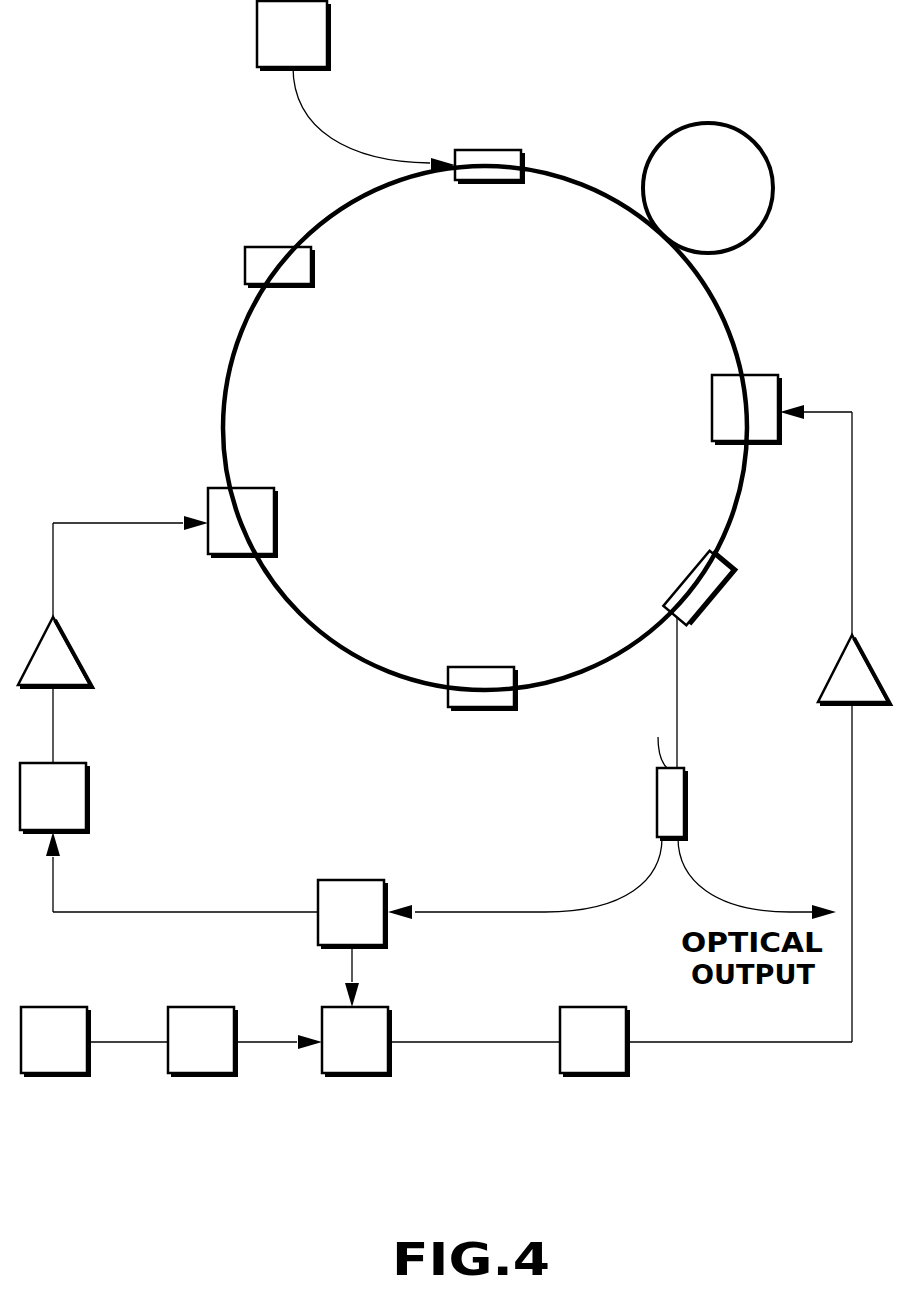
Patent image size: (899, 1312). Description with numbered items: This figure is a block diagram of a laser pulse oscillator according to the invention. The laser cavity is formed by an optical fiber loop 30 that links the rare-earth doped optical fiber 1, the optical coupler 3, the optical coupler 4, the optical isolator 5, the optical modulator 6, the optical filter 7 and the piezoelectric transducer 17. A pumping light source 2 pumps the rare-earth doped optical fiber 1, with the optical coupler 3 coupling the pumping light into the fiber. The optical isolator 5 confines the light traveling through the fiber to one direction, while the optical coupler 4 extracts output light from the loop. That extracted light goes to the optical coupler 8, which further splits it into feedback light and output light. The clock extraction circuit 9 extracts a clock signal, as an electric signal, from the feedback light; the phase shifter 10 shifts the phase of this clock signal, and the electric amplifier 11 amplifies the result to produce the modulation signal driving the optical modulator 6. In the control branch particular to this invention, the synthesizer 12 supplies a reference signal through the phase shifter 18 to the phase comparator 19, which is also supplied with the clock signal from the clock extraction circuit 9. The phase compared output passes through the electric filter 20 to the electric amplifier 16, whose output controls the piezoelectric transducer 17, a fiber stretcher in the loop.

The rare-earth doped optical fiber 1 is at (774, 170).
The pumping light source 2 is at (329, 40).
The optical coupler 3 is at (490, 150).
The optical coupler 4 is at (748, 550).
The optical isolator 5 is at (478, 709).
The optical modulator 6 is at (276, 506).
The optical filter 7 is at (245, 260).
The optical coupler 8 is at (686, 798).
The clock extraction circuit 9 is at (340, 880).
The phase shifter 10 is at (88, 792).
The electric amplifier 11 is at (72, 645).
The synthesizer 12 is at (58, 1075).
The electric amplifier 16 is at (836, 664).
The piezoelectric transducer 17 is at (780, 380).
The phase shifter 18 is at (212, 1073).
The phase comparator 19 is at (364, 1075).
The electric filter 20 is at (600, 1075).
The optical fiber loop 30 is at (224, 380).